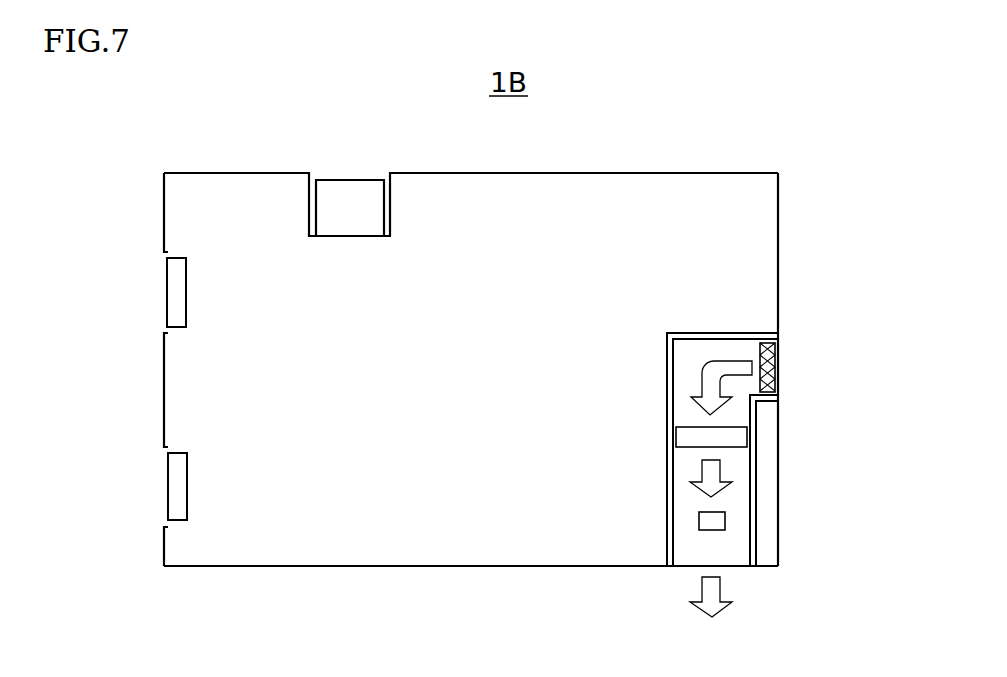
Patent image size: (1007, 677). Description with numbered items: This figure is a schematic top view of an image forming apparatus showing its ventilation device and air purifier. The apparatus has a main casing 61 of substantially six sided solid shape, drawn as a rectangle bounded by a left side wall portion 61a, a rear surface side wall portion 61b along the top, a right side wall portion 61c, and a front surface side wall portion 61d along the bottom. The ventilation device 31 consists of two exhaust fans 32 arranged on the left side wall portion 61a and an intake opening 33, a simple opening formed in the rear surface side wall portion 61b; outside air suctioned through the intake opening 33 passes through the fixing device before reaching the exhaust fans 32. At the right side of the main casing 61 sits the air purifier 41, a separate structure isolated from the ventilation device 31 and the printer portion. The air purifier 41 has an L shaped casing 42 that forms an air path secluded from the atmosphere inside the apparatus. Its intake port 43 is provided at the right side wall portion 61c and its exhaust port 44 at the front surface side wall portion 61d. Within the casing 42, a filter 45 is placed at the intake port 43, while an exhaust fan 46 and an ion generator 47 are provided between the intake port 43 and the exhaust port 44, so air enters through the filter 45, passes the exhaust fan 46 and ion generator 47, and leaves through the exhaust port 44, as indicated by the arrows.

The ventilation device 31 is at (85, 146).
The exhaust fans 32 is at (168, 477).
The intake opening 33 is at (340, 178).
The air purifier 41 is at (756, 479).
The L shaped casing 42 is at (667, 471).
The intake port 43 is at (778, 339).
The exhaust port 44 is at (676, 568).
The filter 45 is at (777, 370).
The exhaust fan 46 is at (683, 434).
The ion generator 47 is at (698, 518).
The main casing 61 is at (612, 173).
The left side wall portion 61a is at (163, 543).
The rear surface side wall portion 61b is at (487, 174).
The right side wall portion 61c is at (779, 250).
The front surface side wall portion 61d is at (470, 567).